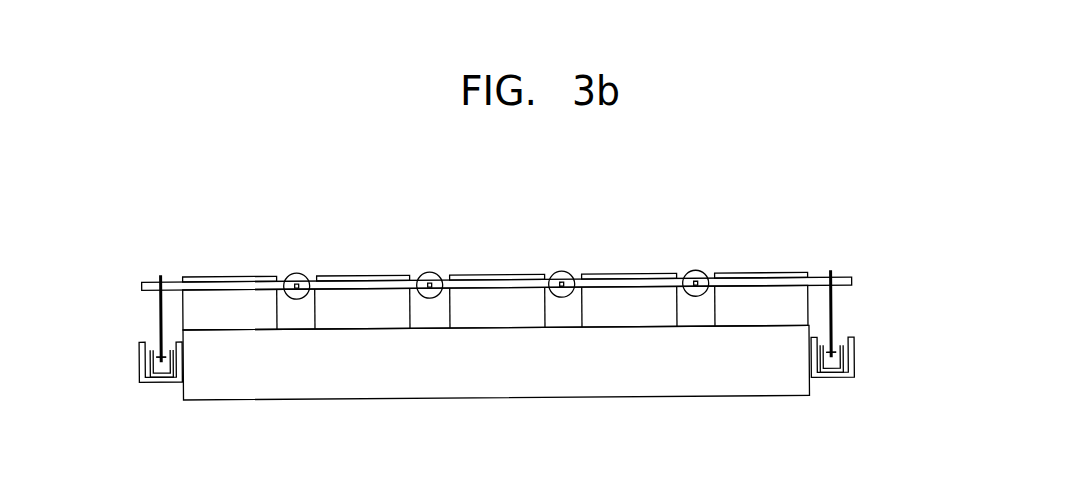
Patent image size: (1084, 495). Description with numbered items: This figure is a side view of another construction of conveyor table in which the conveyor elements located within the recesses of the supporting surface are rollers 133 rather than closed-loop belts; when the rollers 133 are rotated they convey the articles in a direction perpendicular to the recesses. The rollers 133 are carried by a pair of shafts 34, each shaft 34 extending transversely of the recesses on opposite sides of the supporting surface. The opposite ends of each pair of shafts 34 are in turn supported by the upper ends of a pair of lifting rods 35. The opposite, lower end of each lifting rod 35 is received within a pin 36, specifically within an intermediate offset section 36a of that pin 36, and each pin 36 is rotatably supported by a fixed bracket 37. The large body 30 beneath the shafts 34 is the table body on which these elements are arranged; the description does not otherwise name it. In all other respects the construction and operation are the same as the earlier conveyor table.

The base block 30 is at (326, 393).
The shaft 34 is at (362, 282).
The lifting rod 35 is at (158, 308).
The pin 36 is at (140, 362).
The intermediate offset section 36a is at (173, 346).
The fixed bracket 37 is at (158, 383).
The roller 133 is at (289, 275).